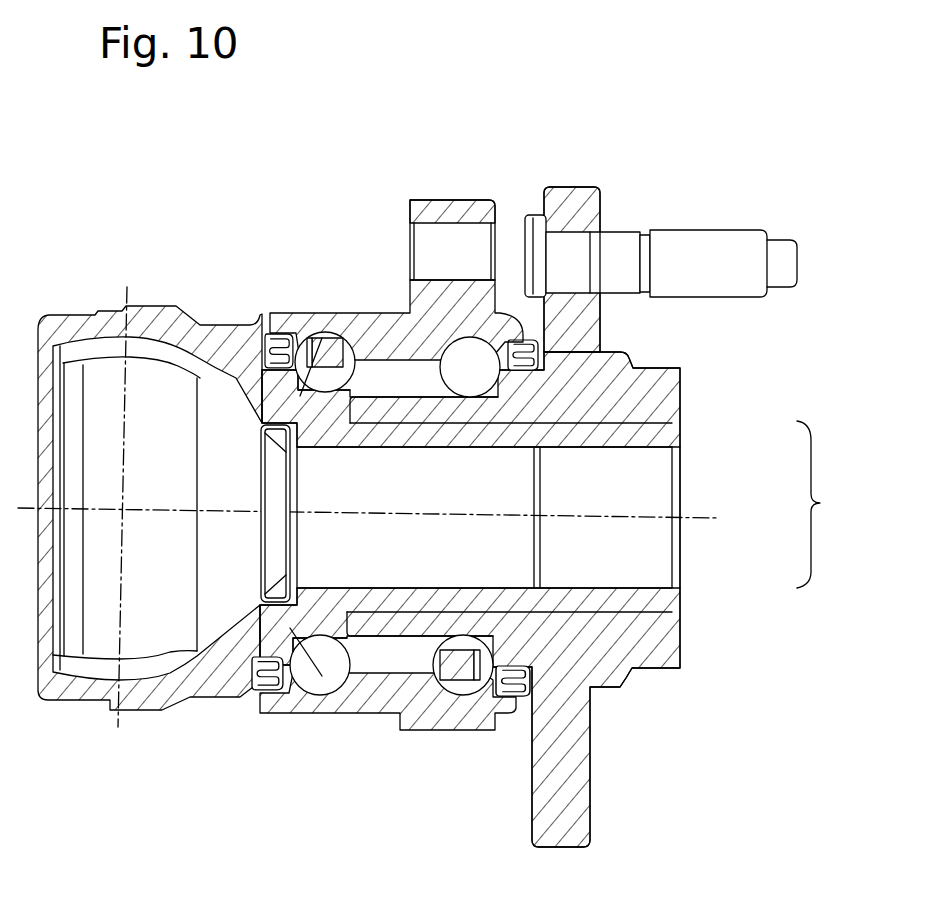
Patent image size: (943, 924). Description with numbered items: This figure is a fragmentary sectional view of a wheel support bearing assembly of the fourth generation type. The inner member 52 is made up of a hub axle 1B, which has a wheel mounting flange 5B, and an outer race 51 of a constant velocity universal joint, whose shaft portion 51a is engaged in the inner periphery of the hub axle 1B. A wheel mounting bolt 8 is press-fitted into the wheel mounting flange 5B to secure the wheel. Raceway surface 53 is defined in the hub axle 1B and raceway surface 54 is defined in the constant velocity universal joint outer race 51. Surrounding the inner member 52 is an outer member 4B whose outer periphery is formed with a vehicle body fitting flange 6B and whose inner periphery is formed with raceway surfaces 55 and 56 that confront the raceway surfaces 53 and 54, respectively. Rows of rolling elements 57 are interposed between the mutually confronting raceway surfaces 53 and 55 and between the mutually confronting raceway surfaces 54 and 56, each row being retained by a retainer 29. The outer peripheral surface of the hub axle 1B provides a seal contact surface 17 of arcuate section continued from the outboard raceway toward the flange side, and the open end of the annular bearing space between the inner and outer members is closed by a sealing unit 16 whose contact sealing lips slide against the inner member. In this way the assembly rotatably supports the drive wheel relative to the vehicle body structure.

The hub axle 1B is at (662, 397).
The outer member 4B is at (397, 323).
The wheel mounting flange 5B is at (574, 203).
The vehicle body fitting flange 6B is at (438, 204).
The wheel mounting bolt 8 is at (713, 252).
The sealing unit 16 is at (266, 343).
The seal contact surface 17 is at (584, 337).
The retainer 29 is at (425, 365).
The outer race of constant velocity universal joint 51 is at (340, 587).
The shaft portion 51a is at (620, 440).
The inner member 52 is at (831, 504).
The raceway surface 53 is at (513, 692).
The raceway surface 54 is at (288, 706).
The raceway surface 55 is at (492, 727).
The raceway surface 56 is at (323, 671).
The rolling elements 57 is at (328, 335).